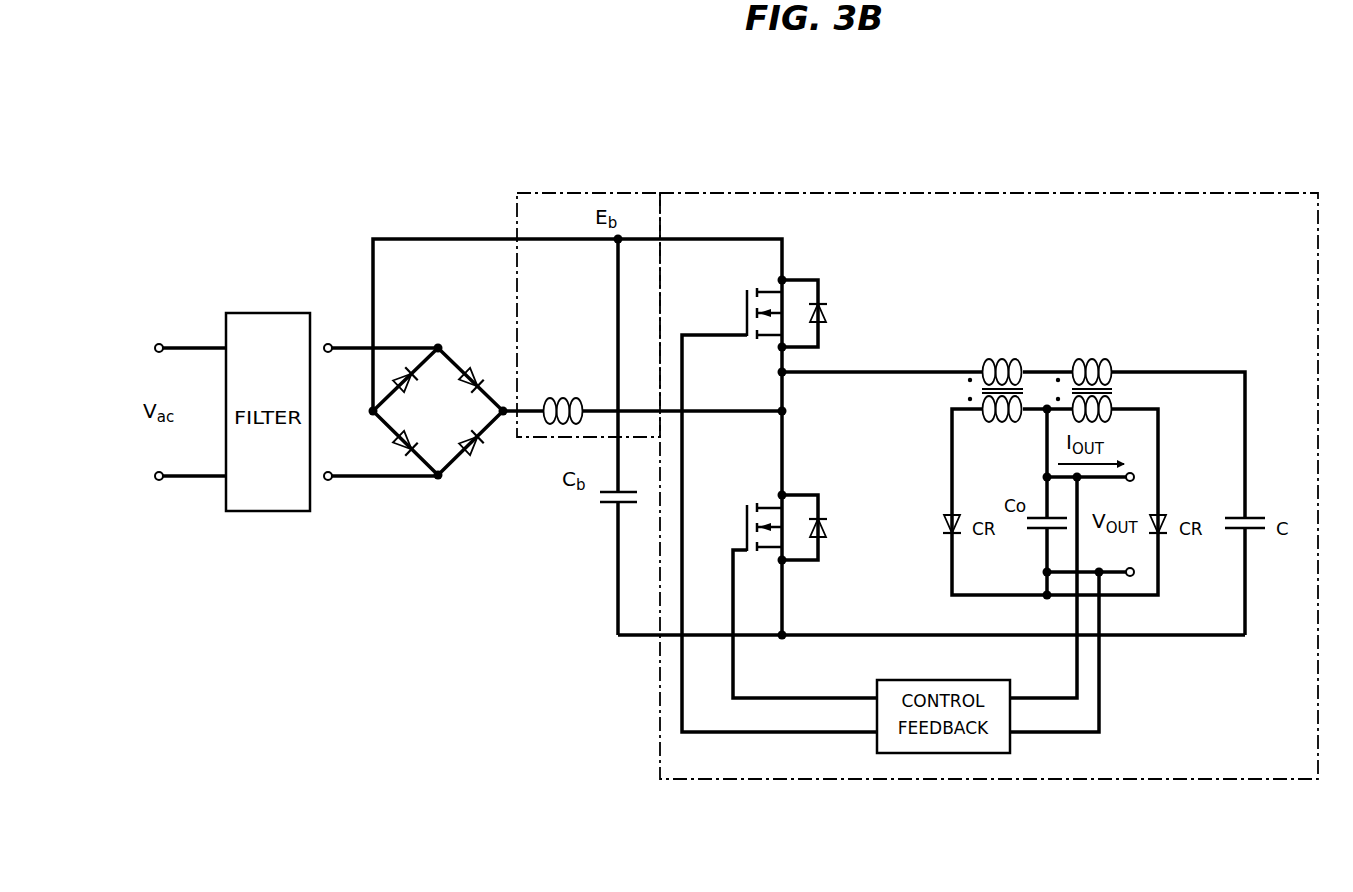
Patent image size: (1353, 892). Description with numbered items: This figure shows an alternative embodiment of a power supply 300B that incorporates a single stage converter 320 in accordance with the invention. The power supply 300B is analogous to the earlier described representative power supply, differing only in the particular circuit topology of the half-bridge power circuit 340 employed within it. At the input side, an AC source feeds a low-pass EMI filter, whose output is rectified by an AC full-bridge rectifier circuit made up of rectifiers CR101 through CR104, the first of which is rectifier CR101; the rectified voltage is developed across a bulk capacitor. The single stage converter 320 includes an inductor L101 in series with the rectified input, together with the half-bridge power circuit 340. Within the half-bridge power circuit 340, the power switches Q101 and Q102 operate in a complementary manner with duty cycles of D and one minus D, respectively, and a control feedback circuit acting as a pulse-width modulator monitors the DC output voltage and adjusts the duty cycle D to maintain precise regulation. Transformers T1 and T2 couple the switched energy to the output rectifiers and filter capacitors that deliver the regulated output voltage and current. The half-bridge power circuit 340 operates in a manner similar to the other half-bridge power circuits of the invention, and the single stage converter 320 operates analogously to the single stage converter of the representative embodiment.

The power supply 300B is at (1008, 162).
The single stage converter 320 is at (709, 180).
The half-bridge power circuit 340 is at (1297, 229).
The power switch Q101 is at (779, 490).
The power switch Q102 is at (788, 554).
The inductor L101 is at (584, 392).
The rectifier CR101 is at (438, 426).
The transformer T1 is at (995, 373).
The transformer T2 is at (1084, 373).